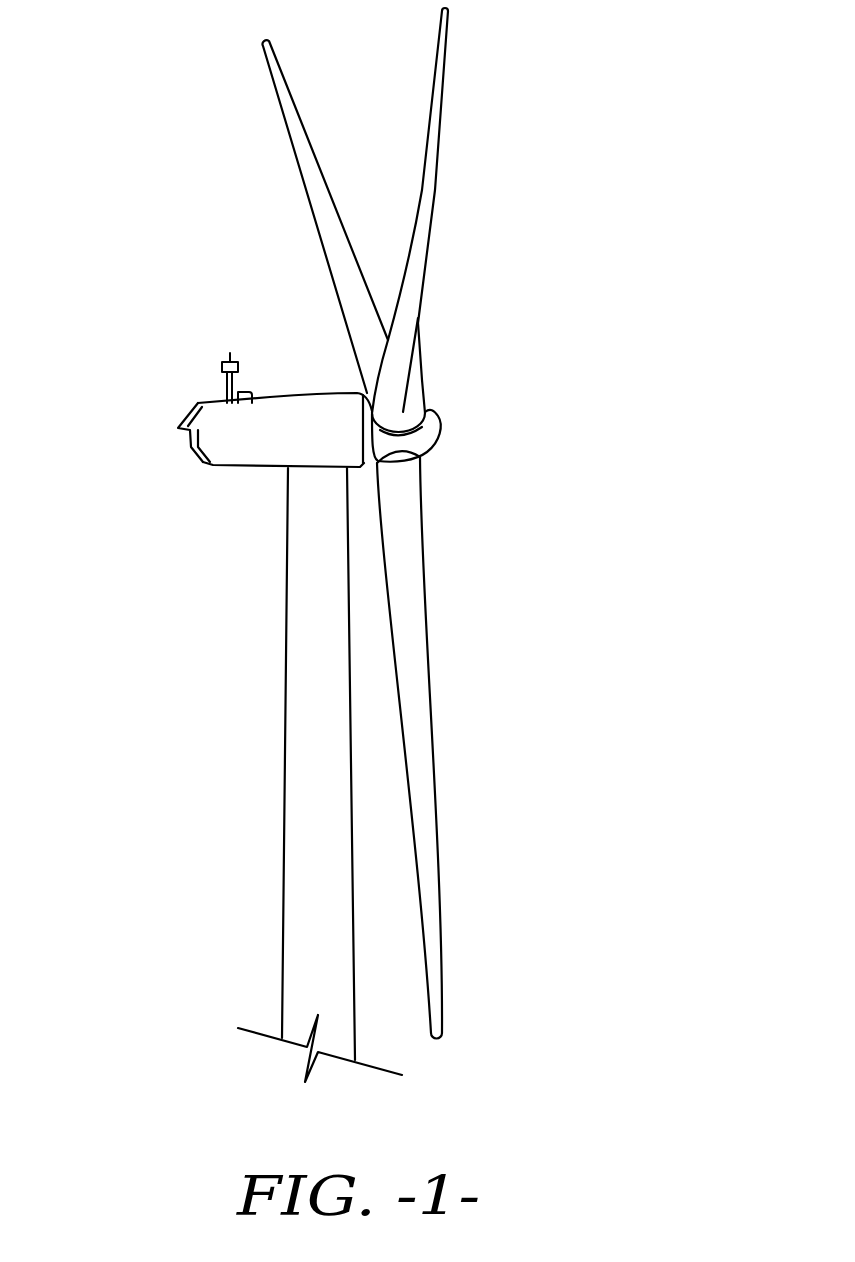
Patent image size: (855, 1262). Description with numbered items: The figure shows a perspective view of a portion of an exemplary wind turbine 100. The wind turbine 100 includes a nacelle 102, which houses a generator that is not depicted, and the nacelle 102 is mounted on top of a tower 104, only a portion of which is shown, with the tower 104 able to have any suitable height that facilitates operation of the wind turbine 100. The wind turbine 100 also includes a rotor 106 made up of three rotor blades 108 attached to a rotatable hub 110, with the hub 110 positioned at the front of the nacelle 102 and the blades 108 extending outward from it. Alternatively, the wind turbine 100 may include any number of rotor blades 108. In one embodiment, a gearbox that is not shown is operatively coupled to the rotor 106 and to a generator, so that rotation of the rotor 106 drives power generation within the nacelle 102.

The wind turbine 100 is at (150, 127).
The nacelle 102 is at (248, 470).
The tower 104 is at (283, 838).
The rotor 106 is at (470, 307).
The rotor blade 108 is at (323, 177).
The rotatable hub 110 is at (442, 438).